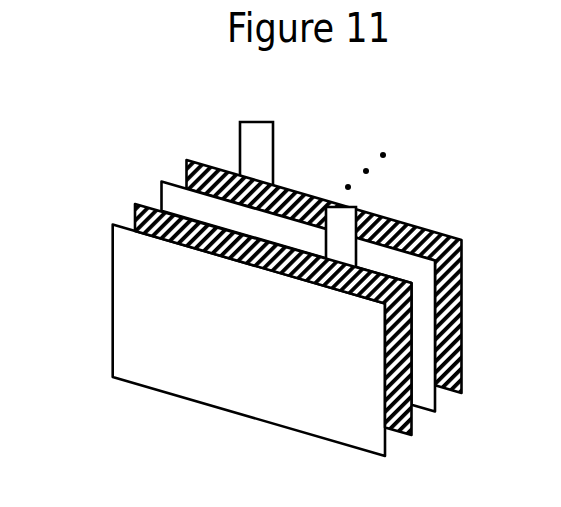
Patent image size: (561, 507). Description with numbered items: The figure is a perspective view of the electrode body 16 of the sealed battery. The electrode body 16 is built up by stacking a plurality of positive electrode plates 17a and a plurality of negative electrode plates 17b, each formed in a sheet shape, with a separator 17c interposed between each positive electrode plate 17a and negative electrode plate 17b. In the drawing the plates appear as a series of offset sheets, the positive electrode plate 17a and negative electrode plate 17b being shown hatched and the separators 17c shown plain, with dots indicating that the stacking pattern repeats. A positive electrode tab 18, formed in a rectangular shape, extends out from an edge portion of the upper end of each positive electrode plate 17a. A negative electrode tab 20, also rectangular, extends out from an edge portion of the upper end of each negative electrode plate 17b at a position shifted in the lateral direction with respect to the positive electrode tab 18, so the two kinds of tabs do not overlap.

The electrode body 16 is at (259, 263).
The positive electrode plate 17a is at (134, 218).
The negative electrode plate 17b is at (186, 175).
The separator 17c is at (159, 187).
The positive electrode tab 18 is at (360, 252).
The negative electrode tab 20 is at (274, 158).